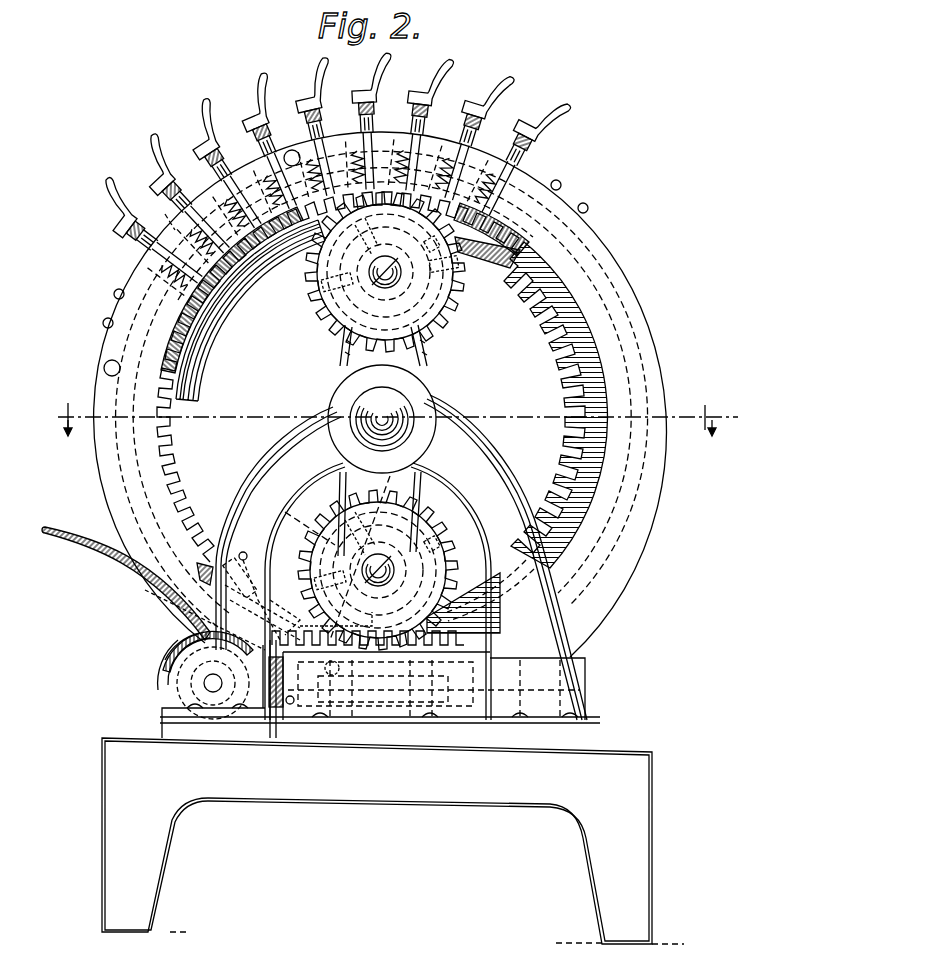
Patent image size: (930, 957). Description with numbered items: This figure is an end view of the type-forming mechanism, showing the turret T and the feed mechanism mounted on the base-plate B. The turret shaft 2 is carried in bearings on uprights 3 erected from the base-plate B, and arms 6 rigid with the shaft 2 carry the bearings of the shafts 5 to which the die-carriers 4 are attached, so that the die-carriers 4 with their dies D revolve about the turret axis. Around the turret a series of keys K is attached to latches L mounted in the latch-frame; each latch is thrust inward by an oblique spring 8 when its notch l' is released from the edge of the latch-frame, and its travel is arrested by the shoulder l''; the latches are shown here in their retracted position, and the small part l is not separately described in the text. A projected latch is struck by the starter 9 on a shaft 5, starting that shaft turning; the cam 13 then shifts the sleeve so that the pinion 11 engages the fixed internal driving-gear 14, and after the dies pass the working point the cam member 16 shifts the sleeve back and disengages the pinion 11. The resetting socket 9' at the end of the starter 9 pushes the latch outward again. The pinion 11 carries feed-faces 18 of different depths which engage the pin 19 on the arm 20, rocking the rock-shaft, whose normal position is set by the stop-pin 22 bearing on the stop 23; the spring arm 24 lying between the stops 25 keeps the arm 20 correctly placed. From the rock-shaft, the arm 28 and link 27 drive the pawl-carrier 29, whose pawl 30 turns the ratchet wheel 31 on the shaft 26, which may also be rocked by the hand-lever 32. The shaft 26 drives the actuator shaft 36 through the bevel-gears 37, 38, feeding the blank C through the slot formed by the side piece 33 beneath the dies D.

The upright 3 is at (377, 561).
The starter 9 is at (343, 381).
The cam 13 is at (208, 363).
The driving-gear 14 is at (517, 437).
The cam member 16 is at (568, 372).
The blank C is at (490, 597).
The latch L is at (327, 158).
The key K is at (185, 122).
The shoulder l'' is at (348, 137).
The notch l' is at (416, 96).
The key stem l is at (162, 215).
The spring 8 is at (220, 205).
The die D is at (400, 415).
The die-carrier 4 is at (381, 421).
The pinion 11 is at (460, 298).
The shaft 5 is at (401, 274).
The feed-face 18 is at (315, 332).
The arm 6 is at (436, 356).
The shaft 2 is at (414, 430).
The turret T is at (401, 545).
The resetting socket 9' is at (358, 561).
The stop 25 is at (368, 624).
The hand-lever 32 is at (123, 583).
The arm 20 is at (242, 552).
The pin 19 is at (248, 569).
The arm 28 is at (222, 609).
The spring arm 24 is at (287, 612).
The pawl-carrier 29 is at (178, 666).
The pawl 30 is at (160, 668).
The bevel-gear 38 is at (158, 684).
The link 27 is at (172, 632).
The shaft 26 is at (216, 700).
The ratchet wheel 31 is at (198, 724).
The bevel-gear 37 is at (277, 722).
The side piece 33 is at (395, 712).
The stop-pin 22 is at (300, 692).
The shaft 36 is at (455, 700).
The stop 23 is at (291, 708).
The base-plate B is at (393, 841).